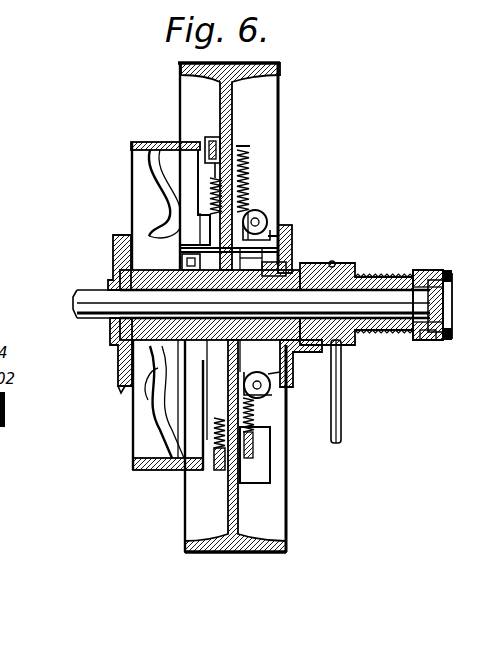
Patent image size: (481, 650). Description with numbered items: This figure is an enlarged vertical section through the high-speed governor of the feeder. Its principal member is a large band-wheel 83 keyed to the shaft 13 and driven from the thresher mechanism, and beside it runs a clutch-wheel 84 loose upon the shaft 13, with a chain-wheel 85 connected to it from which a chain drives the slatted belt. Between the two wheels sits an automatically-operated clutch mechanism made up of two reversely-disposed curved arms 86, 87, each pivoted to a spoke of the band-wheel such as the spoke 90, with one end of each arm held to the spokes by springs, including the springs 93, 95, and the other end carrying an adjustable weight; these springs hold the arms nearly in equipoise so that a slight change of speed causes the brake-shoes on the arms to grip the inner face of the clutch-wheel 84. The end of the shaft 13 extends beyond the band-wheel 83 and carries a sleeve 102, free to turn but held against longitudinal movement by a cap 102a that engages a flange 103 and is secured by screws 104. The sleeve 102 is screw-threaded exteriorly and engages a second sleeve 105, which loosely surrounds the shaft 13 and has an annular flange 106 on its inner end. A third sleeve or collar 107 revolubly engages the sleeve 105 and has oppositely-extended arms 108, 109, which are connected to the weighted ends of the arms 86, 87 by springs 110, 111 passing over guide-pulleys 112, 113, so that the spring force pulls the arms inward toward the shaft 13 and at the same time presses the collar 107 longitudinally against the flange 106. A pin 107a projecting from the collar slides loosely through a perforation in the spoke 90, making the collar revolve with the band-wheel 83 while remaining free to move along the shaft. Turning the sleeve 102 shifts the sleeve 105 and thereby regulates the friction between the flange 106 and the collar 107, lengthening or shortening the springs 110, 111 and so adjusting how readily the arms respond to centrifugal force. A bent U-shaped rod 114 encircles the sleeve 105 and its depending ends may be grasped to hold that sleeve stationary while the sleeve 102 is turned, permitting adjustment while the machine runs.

The shaft 13 is at (78, 320).
The band-wheel 83 is at (280, 503).
The clutch-wheel 84 is at (152, 468).
The chain-wheel 85 is at (121, 387).
The curved arm 86 is at (221, 148).
The curved arm 87 is at (249, 172).
The spoke 90 is at (234, 113).
The spring 93 is at (210, 181).
The spring 95 is at (214, 426).
The sleeve 102 is at (404, 272).
The cap 102a is at (446, 289).
The flange 103 is at (427, 342).
The screws 104 is at (449, 270).
The sleeve 105 is at (345, 262).
The annular flange 106 is at (274, 344).
The collar 107 is at (308, 352).
The pin 107a is at (278, 283).
The arm 108 is at (292, 243).
The arm 109 is at (285, 384).
The spring 110 is at (250, 192).
The spring 111 is at (262, 402).
The guide-pulley 112 is at (266, 219).
The guide-pulley 113 is at (332, 417).
The U-shaped rod 114 is at (342, 378).